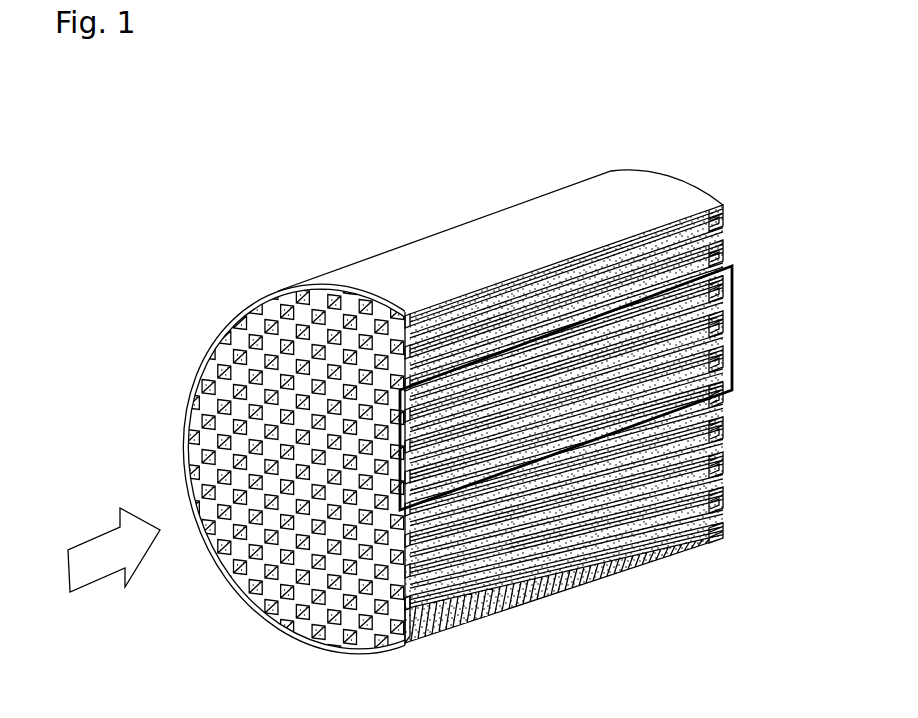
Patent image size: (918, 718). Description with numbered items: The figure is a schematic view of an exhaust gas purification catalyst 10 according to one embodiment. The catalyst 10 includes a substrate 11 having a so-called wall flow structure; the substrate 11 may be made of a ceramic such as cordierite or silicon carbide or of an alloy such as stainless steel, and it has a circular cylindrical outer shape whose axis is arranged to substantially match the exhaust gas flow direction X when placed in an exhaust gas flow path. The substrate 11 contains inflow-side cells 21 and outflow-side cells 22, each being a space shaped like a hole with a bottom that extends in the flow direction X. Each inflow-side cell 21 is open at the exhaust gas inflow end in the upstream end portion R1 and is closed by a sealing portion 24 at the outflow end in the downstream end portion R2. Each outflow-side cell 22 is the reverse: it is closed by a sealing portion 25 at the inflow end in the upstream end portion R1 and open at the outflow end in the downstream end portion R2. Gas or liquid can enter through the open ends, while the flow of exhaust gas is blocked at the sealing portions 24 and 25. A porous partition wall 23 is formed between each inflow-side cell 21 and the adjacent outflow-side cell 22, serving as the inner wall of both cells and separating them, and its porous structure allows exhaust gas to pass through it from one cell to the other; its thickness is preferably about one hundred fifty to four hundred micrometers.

The exhaust gas purification catalyst 10 is at (563, 114).
The substrate 11 is at (467, 250).
The inflow-side cell 21 is at (500, 583).
The outflow-side cell 22 is at (613, 554).
The partition wall 23 is at (674, 497).
The sealing portion 24 is at (725, 500).
The sealing portion 25 is at (410, 618).
The upstream end portion R1 is at (237, 343).
The downstream end portion R2 is at (724, 232).
The exhaust gas flow direction X is at (98, 560).